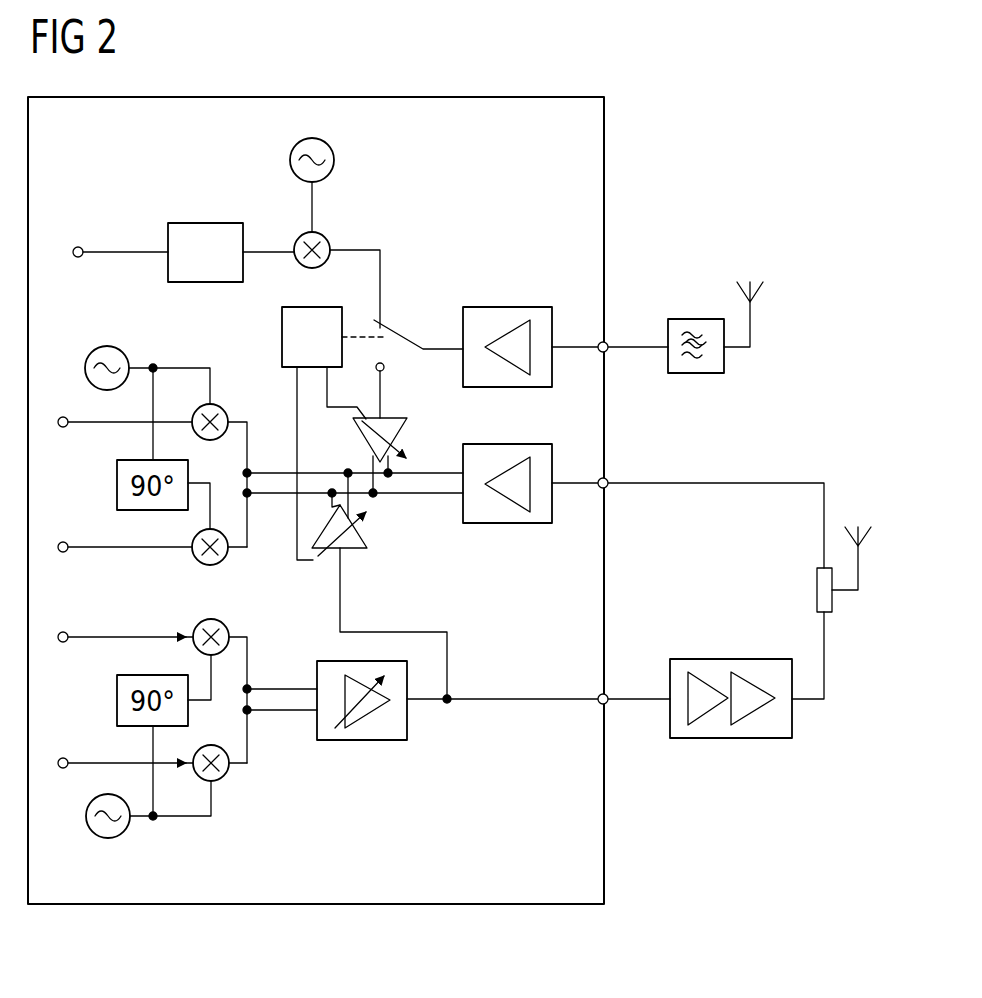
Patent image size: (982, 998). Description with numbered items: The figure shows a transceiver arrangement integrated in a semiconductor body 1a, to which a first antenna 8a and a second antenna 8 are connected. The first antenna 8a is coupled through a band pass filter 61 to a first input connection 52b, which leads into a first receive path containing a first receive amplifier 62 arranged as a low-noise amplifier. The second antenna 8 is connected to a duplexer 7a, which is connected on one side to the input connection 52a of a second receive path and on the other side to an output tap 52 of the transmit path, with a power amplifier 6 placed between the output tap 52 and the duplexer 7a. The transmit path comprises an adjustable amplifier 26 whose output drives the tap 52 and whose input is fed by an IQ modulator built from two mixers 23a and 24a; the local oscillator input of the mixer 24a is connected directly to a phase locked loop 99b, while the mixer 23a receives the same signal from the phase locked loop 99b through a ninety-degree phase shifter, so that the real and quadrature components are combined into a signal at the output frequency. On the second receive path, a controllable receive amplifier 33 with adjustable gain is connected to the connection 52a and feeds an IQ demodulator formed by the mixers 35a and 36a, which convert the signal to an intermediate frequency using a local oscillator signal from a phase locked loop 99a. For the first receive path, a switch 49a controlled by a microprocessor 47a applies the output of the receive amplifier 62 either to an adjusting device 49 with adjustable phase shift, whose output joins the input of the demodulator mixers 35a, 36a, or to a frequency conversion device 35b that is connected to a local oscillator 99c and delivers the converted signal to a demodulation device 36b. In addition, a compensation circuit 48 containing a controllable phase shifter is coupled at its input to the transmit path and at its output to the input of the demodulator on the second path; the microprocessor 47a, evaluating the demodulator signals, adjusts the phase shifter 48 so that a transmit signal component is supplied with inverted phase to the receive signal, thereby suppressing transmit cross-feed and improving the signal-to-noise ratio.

The semiconductor body 1a is at (320, 904).
The demodulation device 36b is at (206, 223).
The frequency conversion device 35b is at (324, 238).
The local oscillator 99c is at (334, 160).
The switch 49a is at (390, 326).
The microprocessor 47a is at (282, 330).
The adjusting device 49 is at (396, 418).
The compensation circuit 48 is at (352, 548).
The first receive amplifier 62 is at (505, 307).
The first input connection 52b is at (608, 343).
The band pass filter 61 is at (696, 319).
The first antenna 8a is at (758, 292).
The controllable receive amplifier 33 is at (508, 523).
The input connection 52a is at (608, 479).
The duplexer 7a is at (817, 590).
The second antenna 8 is at (866, 537).
The power amplifier 6 is at (730, 659).
The output tap 52 is at (608, 695).
The phase locked loop 99a is at (104, 346).
The mixer 35a is at (222, 408).
The mixer 36a is at (199, 562).
The mixer 23a is at (222, 622).
The mixer 24a is at (224, 778).
The phase locked loop 99b is at (122, 835).
The adjustable amplifier 26 is at (362, 740).